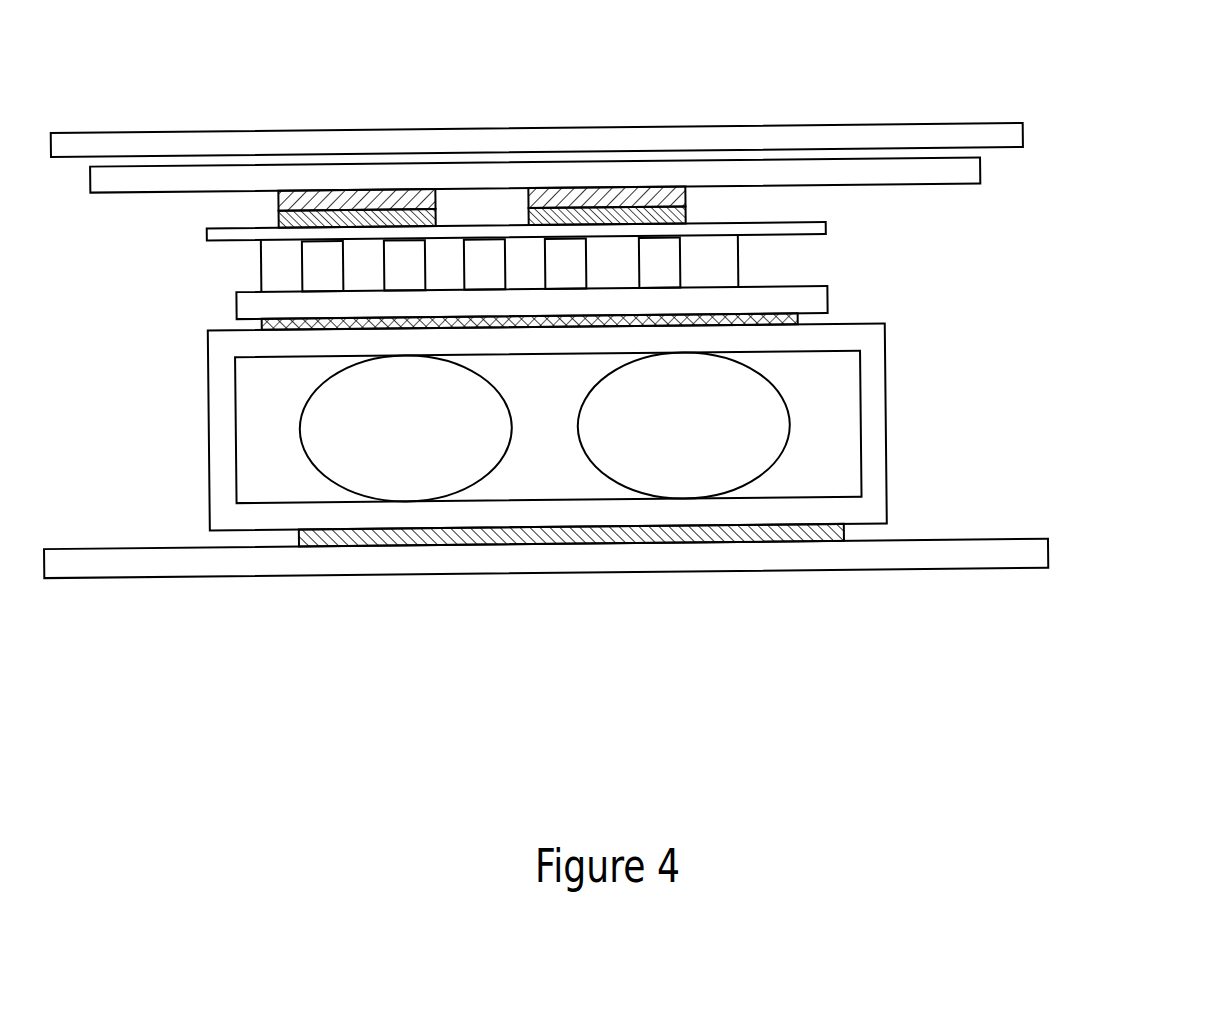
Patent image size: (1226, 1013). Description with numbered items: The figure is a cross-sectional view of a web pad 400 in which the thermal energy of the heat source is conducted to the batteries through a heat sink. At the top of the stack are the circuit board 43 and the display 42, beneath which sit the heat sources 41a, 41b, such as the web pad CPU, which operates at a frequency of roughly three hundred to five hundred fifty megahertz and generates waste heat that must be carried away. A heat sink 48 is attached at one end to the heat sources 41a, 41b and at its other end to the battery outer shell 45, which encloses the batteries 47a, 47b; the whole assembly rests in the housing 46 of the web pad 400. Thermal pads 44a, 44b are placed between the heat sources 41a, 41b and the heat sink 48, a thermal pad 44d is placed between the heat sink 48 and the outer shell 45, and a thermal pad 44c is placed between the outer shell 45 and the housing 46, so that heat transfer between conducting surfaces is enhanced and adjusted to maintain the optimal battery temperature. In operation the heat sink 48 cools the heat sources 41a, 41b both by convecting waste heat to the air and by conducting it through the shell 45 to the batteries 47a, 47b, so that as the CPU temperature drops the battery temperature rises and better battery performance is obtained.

The heat source 41a is at (323, 190).
The heat source 41b is at (573, 190).
The display 42 is at (792, 137).
The circuit board 43 is at (883, 175).
The thermal pad 44a is at (427, 195).
The thermal pad 44b is at (677, 190).
The thermal pad 44c is at (780, 535).
The thermal pad 44d is at (798, 313).
The outer shell 45 is at (872, 455).
The housing 46 is at (958, 548).
The battery 47a is at (633, 463).
The battery 47b is at (393, 465).
The heat sink 48 is at (720, 256).
The web pad 400 is at (1080, 650).